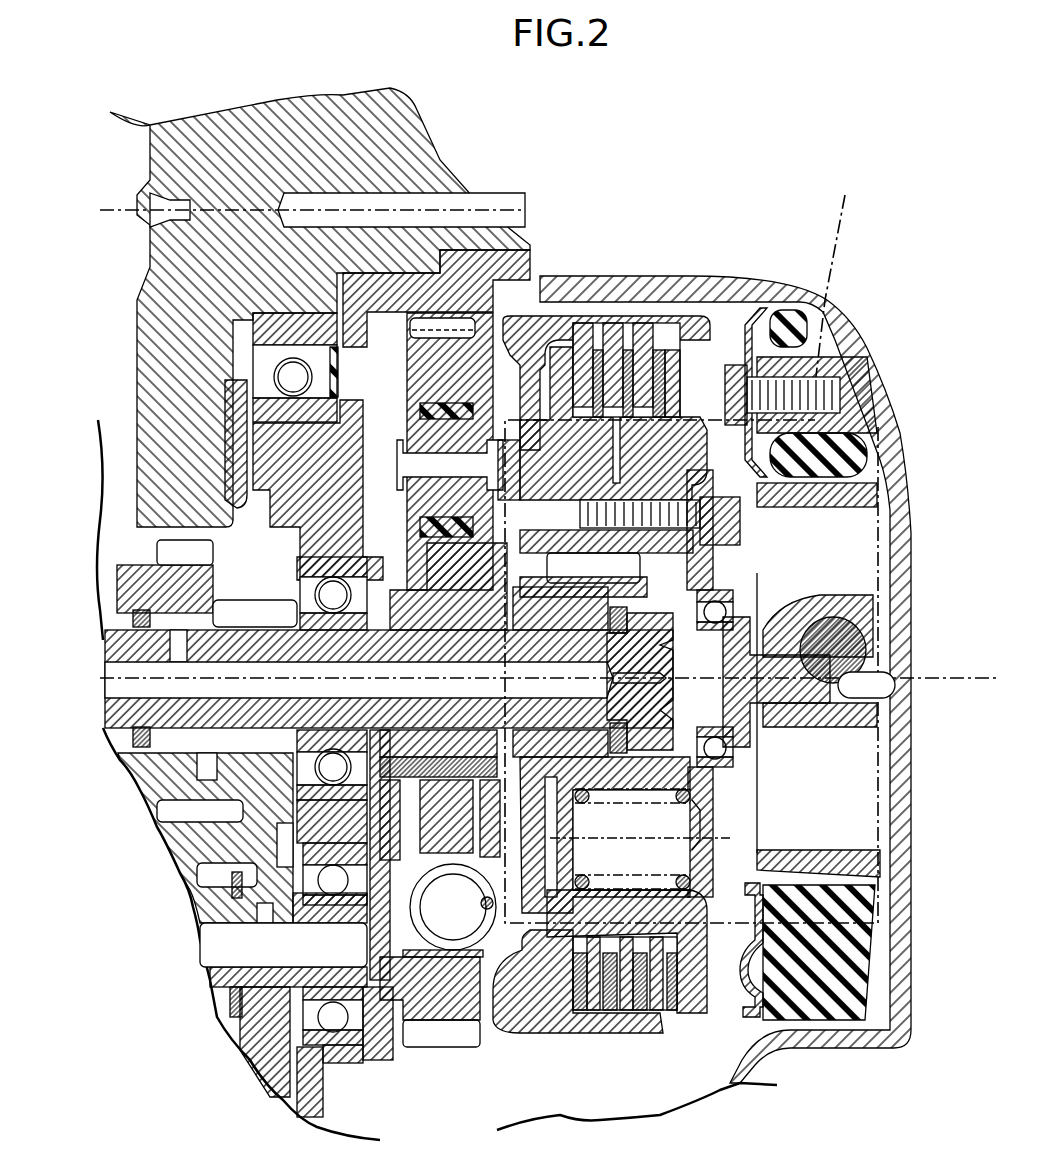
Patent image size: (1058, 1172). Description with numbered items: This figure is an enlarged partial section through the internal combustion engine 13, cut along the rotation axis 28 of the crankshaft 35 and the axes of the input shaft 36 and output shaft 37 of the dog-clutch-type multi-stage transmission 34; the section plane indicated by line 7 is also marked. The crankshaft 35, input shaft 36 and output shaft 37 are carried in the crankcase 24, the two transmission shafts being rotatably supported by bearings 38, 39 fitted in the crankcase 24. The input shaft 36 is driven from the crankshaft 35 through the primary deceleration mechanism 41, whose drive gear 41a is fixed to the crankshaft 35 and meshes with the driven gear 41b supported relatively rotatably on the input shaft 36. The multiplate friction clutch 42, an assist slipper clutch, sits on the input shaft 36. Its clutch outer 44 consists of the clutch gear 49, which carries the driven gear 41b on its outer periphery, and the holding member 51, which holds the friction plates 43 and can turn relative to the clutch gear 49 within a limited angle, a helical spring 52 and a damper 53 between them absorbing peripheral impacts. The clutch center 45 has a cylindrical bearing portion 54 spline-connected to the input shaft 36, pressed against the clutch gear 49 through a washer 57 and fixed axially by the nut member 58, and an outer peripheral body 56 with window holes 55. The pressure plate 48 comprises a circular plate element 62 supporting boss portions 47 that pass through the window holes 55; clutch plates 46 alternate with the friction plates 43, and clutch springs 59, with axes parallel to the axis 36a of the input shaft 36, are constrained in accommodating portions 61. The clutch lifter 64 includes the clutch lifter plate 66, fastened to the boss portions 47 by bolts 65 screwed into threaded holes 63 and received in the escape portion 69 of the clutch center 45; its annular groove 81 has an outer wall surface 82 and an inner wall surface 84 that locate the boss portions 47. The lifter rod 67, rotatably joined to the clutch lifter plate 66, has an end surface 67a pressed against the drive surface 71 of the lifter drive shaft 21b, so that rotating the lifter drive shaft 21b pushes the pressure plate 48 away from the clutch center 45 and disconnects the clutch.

The internal combustion engine 13 is at (600, 172).
The crankshaft 35 is at (430, 178).
The rotation axis 28 is at (482, 208).
The primary deceleration mechanism 41 is at (416, 408).
The drive gear 41a is at (393, 333).
The driven gear 41b is at (430, 335).
The friction plates 43 is at (586, 328).
The multiplate friction clutch 42 is at (717, 333).
The section line 7 is at (691, 558).
The pressure plate 48 is at (536, 392).
The clutch gear 49 is at (443, 408).
The damper 53 is at (403, 457).
The outer peripheral body 56 is at (637, 460).
The clutch center 45 is at (710, 443).
The holding member 51 is at (435, 500).
The multi-stage transmission 34 is at (135, 555).
The crankcase 24 is at (318, 532).
The bearing 38 is at (315, 572).
The washer 57 is at (485, 612).
The bearing portion 54 is at (585, 619).
The threaded hole 63 is at (615, 532).
The boss portions 47 is at (663, 545).
The bolts 65 is at (735, 522).
The clutch lifter plate 66 is at (712, 578).
The lifter drive shaft 21b is at (830, 600).
The window holes 55 is at (640, 576).
The input shaft 36 is at (521, 656).
The axis of the input shaft 36a is at (127, 677).
The end surface 67a is at (840, 690).
The nut member 58 is at (625, 825).
The lifter rod 67 is at (846, 664).
The drive surface 71 is at (820, 673).
The clutch springs 59 is at (590, 797).
The clutch lifter 64 is at (783, 683).
The inner wall surface 84 is at (713, 823).
The accommodating portions 61 is at (612, 890).
The circular plate element 62 is at (527, 870).
The annular groove 81 is at (703, 843).
The outer wall surface 82 is at (710, 870).
The helical spring 52 is at (407, 913).
The escape portion 69 is at (710, 915).
The output shaft 37 is at (223, 984).
The bearing 39 is at (363, 1057).
The clutch outer 44 is at (503, 1040).
The clutch plates 46 is at (597, 1012).